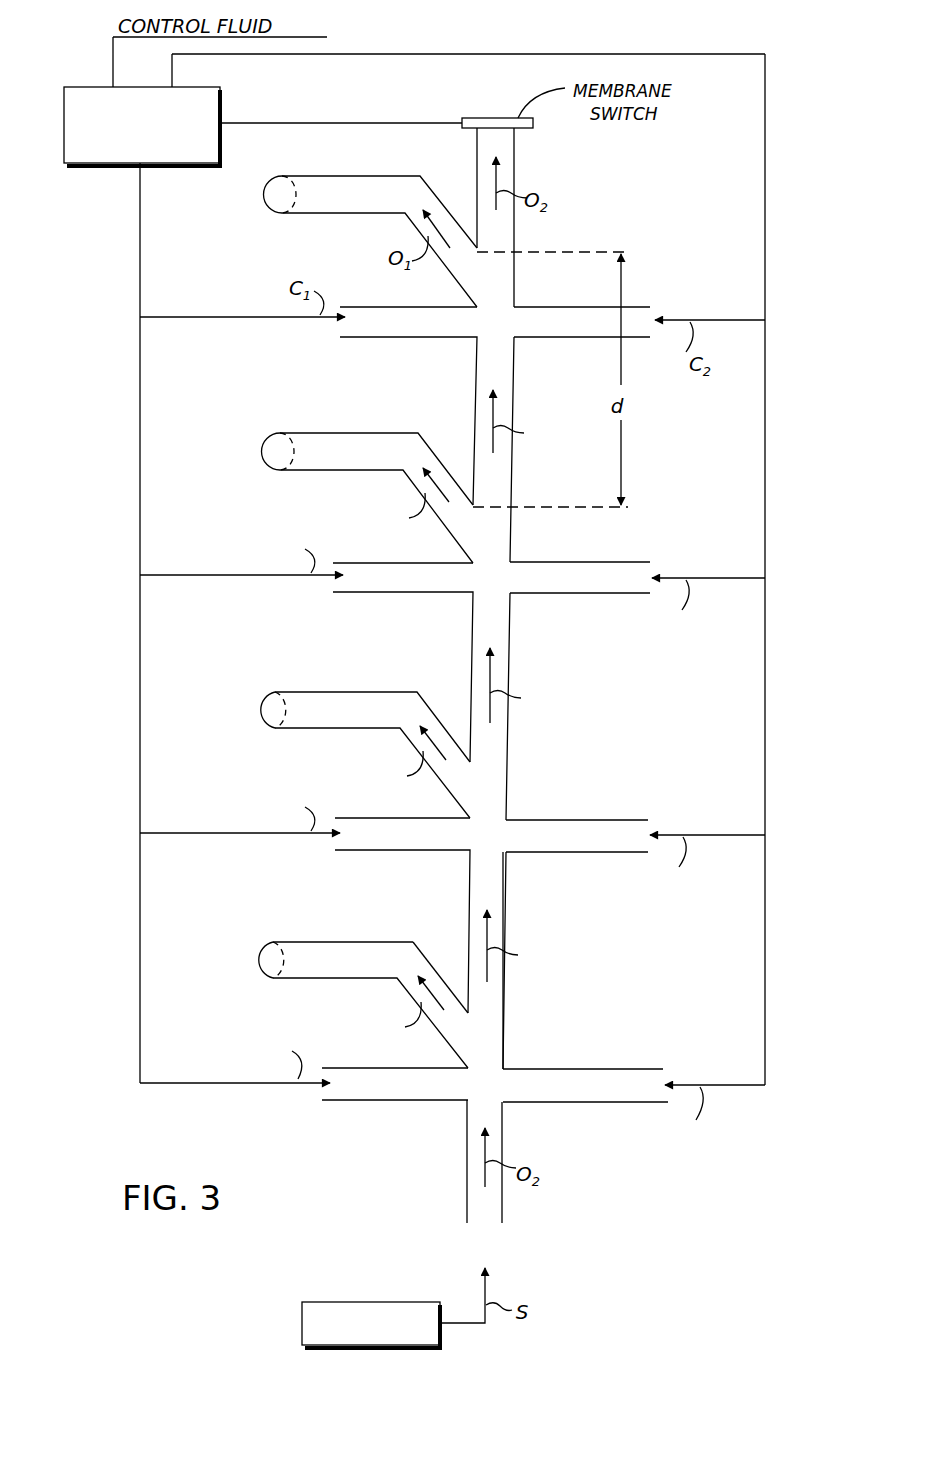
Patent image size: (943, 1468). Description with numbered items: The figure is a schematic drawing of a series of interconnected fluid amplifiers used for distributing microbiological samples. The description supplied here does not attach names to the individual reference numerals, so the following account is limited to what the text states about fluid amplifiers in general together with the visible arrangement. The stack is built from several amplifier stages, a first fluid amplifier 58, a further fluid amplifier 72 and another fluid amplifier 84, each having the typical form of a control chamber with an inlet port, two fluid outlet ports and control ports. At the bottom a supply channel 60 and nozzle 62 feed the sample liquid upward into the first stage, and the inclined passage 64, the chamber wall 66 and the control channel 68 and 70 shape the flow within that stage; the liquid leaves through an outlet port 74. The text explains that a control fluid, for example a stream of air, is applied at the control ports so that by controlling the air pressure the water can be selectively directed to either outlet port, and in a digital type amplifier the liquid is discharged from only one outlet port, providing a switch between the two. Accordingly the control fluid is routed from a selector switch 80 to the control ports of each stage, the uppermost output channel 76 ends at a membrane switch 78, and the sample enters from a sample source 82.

The first stage fluidic amplifier 58 is at (452, 1000).
The supply channel 60 is at (467, 1135).
The supply nozzle 62 is at (467, 1203).
The inclined output passage 64 is at (432, 958).
The interaction chamber wall 66 is at (503, 995).
The first control channel 68 is at (352, 1100).
The second control channel wall 70 is at (503, 918).
The second stage fluidic amplifier 72 is at (528, 802).
The output port 74 is at (276, 940).
The output channel 76 is at (514, 155).
The membrane switch 78 is at (478, 115).
The selector switch 80 is at (207, 106).
The sample source 82 is at (348, 1302).
The third stage fluidic amplifier 84 is at (650, 488).